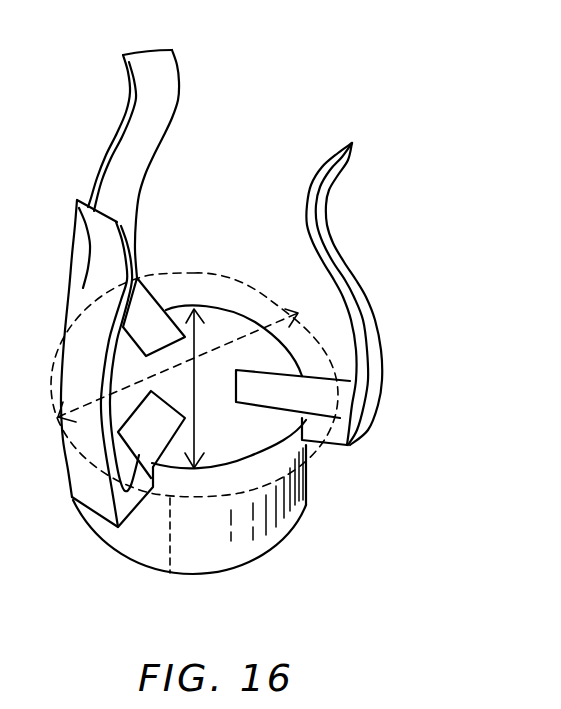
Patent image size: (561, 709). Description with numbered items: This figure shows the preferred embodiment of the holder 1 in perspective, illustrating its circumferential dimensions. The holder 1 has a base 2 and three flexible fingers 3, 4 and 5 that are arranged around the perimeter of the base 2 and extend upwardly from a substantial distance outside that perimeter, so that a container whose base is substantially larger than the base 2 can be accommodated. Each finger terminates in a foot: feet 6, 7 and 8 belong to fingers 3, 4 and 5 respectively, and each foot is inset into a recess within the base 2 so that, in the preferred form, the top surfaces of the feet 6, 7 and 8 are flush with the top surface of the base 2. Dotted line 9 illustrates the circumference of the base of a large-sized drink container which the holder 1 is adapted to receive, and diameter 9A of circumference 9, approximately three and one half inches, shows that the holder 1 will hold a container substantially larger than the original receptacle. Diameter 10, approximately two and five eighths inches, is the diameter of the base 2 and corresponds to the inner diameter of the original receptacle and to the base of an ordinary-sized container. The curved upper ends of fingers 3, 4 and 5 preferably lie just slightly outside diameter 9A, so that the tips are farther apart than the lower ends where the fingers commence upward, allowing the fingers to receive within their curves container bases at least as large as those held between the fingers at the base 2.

The holder 1 is at (257, 110).
The base 2 is at (92, 570).
The flexible finger 3 is at (128, 163).
The flexible finger 4 is at (353, 263).
The flexible finger 5 is at (98, 308).
The foot 6 is at (160, 343).
The foot 7 is at (274, 401).
The foot 8 is at (157, 443).
The dotted line 9 is at (170, 573).
The diameter 9A is at (236, 341).
The diameter 10 is at (196, 345).